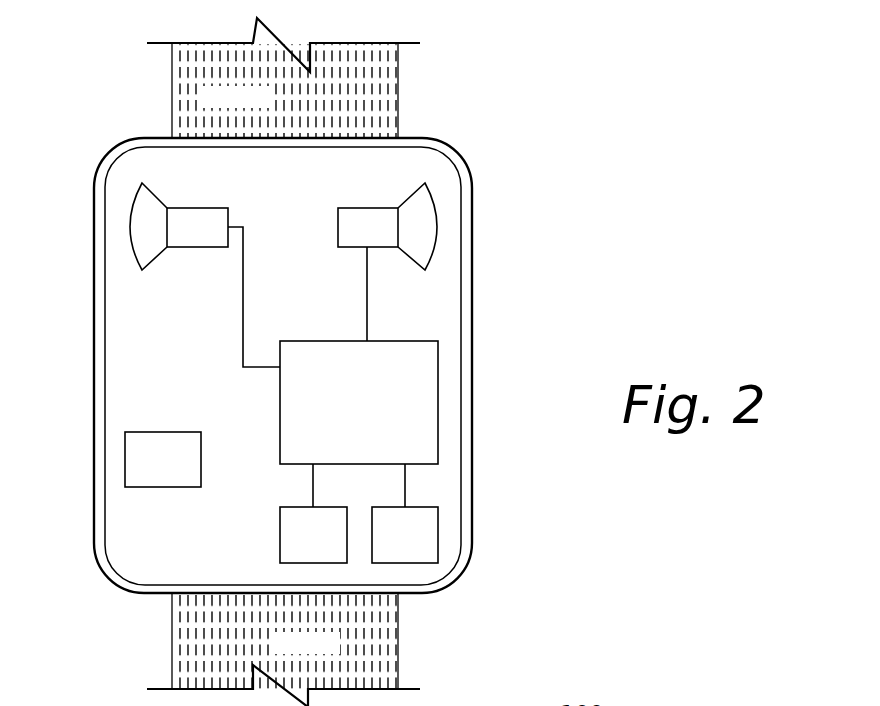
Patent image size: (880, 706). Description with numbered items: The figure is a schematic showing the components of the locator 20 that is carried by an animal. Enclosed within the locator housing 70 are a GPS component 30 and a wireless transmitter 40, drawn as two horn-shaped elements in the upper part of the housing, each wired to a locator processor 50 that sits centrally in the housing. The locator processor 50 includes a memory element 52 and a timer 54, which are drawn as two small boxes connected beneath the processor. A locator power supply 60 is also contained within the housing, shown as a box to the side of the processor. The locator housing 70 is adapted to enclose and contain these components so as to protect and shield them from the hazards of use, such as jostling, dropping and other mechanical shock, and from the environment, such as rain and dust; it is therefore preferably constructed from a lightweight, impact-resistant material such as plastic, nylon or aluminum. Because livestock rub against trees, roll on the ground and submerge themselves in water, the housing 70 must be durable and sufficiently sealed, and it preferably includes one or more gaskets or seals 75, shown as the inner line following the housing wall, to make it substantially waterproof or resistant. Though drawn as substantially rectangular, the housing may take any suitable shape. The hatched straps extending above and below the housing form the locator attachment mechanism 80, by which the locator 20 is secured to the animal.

The locator 20 is at (556, 226).
The GPS component 30 is at (430, 212).
The wireless transmitter 40 is at (130, 227).
The locator processor 50 is at (359, 402).
The memory element 52 is at (295, 538).
The timer 54 is at (425, 538).
The locator power supply 60 is at (133, 452).
The locator housing 70 is at (486, 360).
The gaskets or seals 75 is at (480, 429).
The locator attachment mechanism 80 is at (283, 362).